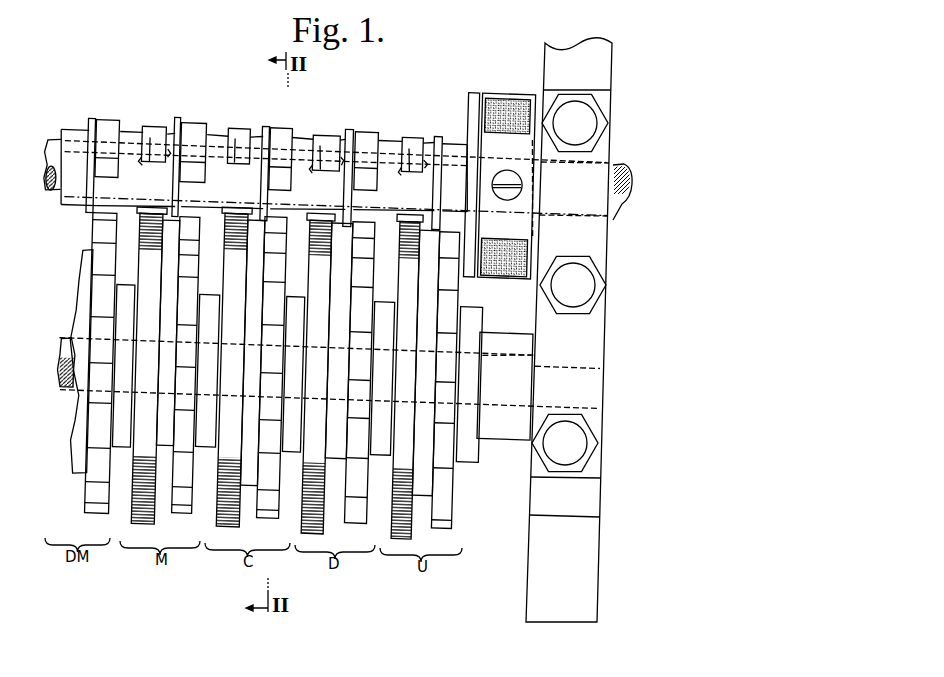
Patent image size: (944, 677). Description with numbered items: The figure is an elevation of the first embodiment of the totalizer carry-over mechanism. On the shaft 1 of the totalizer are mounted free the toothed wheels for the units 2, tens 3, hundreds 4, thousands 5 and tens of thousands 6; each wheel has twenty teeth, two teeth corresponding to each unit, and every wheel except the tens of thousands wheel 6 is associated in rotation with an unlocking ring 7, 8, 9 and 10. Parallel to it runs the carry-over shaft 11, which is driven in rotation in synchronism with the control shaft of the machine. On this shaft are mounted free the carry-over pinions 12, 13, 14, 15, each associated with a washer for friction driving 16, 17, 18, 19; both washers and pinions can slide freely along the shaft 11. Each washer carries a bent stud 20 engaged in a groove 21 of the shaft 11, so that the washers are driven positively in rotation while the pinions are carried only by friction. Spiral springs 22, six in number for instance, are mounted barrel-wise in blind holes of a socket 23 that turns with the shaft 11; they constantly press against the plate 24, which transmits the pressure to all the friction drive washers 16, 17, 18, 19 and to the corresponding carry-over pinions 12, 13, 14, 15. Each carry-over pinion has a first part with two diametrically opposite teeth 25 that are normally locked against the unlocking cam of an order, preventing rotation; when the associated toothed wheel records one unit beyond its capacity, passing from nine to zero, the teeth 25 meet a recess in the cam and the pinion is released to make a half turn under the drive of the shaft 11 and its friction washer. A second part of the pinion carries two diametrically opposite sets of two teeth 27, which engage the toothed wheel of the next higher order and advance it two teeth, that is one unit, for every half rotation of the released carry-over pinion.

The shaft of the totalizer 1 is at (68, 349).
The toothed wheel for the units 2 is at (445, 380).
The toothed wheel for the tens 3 is at (359, 373).
The toothed wheel for the hundreds 4 is at (272, 368).
The toothed wheel for the thousands 5 is at (186, 365).
The toothed wheel for the tens of thousands 6 is at (101, 363).
The unlocking ring 7 is at (405, 376).
The unlocking ring 8 is at (316, 373).
The unlocking ring 9 is at (232, 367).
The unlocking ring 10 is at (147, 365).
The carry-over shaft 11 is at (618, 167).
The carry-over pinion 12 is at (394, 176).
The carry-over pinion 13 is at (308, 174).
The carry-over pinion 14 is at (223, 172).
The carry-over pinion 15 is at (136, 170).
The washer for friction driving 16 is at (431, 132).
The washer for friction driving 17 is at (342, 128).
The washer for friction driving 18 is at (259, 128).
The washer for friction driving 19 is at (170, 122).
The bent stud 20 is at (237, 138).
The groove 21 is at (293, 160).
The spiral springs 22 is at (506, 91).
The socket 23 is at (506, 186).
The plate 24 is at (463, 91).
The teeth 25 is at (283, 159).
The sets of two teeth 27 is at (100, 130).